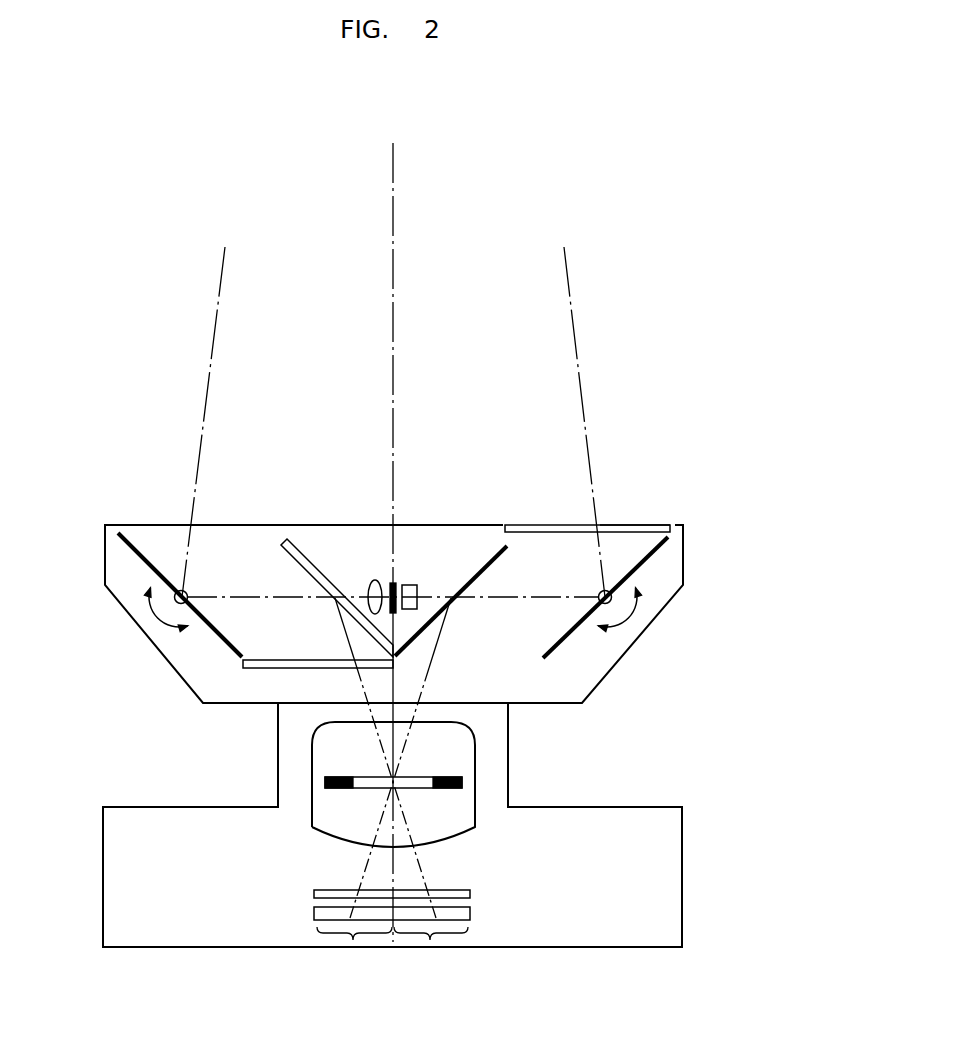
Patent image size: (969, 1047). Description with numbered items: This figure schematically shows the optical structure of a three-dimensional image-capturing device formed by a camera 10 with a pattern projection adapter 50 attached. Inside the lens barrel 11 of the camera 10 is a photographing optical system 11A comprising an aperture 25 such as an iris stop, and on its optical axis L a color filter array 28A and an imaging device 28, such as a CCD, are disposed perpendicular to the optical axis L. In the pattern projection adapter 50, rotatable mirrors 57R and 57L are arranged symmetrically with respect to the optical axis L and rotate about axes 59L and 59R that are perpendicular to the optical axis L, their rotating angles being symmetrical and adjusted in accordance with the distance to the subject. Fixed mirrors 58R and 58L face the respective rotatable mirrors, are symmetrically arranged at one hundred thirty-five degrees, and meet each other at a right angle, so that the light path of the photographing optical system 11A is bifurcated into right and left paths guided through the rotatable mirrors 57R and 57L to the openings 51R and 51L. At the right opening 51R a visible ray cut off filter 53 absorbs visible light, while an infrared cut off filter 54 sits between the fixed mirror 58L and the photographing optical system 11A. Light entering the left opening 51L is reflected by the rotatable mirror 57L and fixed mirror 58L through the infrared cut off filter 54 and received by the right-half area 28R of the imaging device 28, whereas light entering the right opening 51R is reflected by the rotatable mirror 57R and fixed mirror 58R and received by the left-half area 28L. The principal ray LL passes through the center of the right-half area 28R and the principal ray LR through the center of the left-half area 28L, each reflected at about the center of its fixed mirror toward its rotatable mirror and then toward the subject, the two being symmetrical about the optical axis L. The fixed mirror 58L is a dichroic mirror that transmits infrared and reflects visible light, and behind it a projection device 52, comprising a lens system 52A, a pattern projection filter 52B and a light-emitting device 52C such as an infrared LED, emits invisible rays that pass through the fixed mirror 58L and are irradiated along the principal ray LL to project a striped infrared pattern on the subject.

The camera 10 is at (392, 864).
The lens barrel 11 is at (509, 758).
The photographing optical system 11A is at (452, 830).
The aperture 25 is at (368, 789).
The imaging device 28 is at (471, 914).
The color filter array 28A is at (471, 894).
The left-half area 28L is at (354, 952).
The right-half area 28R is at (431, 952).
The pattern projection adapter 50 is at (694, 539).
The left opening 51L is at (148, 524).
The right opening 51R is at (640, 524).
The projection device 52 is at (395, 524).
The lens system 52A is at (368, 580).
The pattern projection filter 52B is at (397, 580).
The light-emitting device 52C is at (415, 586).
The visible ray cut off filter 53 is at (541, 524).
The infrared cut off filter 54 is at (258, 668).
The rotatable mirror 57L is at (133, 550).
The rotatable mirror 57R is at (657, 550).
The fixed mirror 58L is at (307, 553).
The fixed mirror 58R is at (487, 560).
The axis 59L is at (186, 592).
The axis 59R is at (600, 592).
The optical axis L is at (397, 163).
The principal ray LL is at (218, 277).
The principal ray LR is at (570, 277).